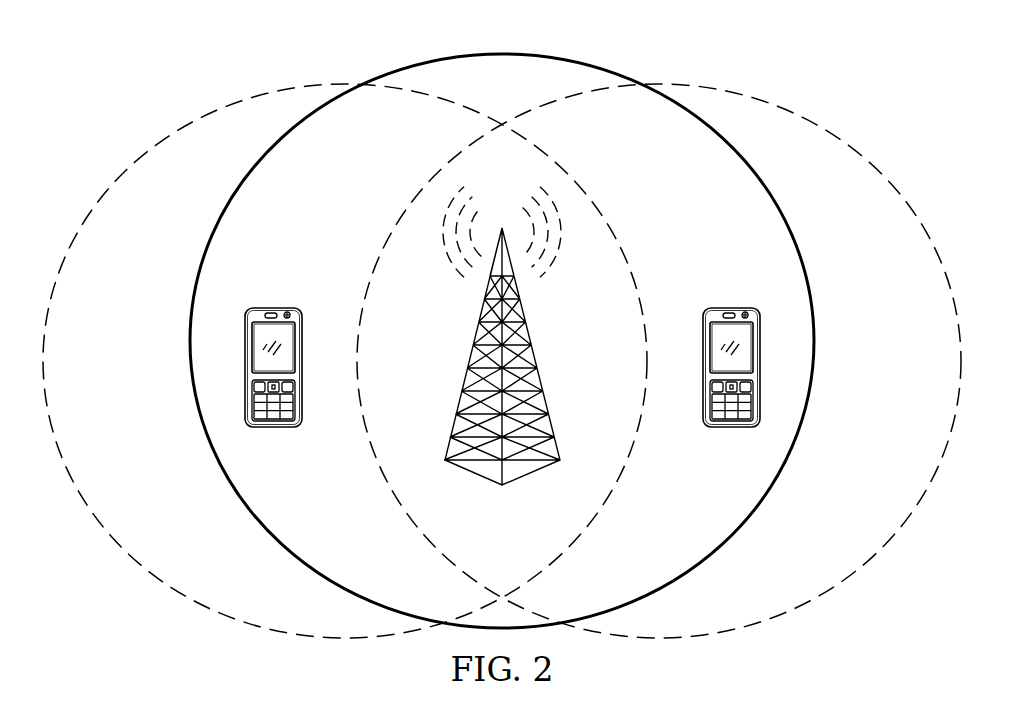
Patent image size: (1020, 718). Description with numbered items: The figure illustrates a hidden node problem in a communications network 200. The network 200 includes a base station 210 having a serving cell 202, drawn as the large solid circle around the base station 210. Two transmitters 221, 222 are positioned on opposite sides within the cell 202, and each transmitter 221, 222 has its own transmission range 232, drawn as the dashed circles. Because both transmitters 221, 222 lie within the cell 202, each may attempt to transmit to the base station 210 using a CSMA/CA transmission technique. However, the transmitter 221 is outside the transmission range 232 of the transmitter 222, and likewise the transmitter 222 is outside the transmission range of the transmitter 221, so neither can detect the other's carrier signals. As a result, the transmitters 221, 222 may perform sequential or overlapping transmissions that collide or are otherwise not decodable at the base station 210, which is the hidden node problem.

The communications network 200 is at (782, 68).
The serving cell 202 is at (483, 97).
The base station 210 is at (534, 357).
The transmitter 221 is at (277, 307).
The transmitter 222 is at (730, 307).
The transmission range 232 is at (97, 379).